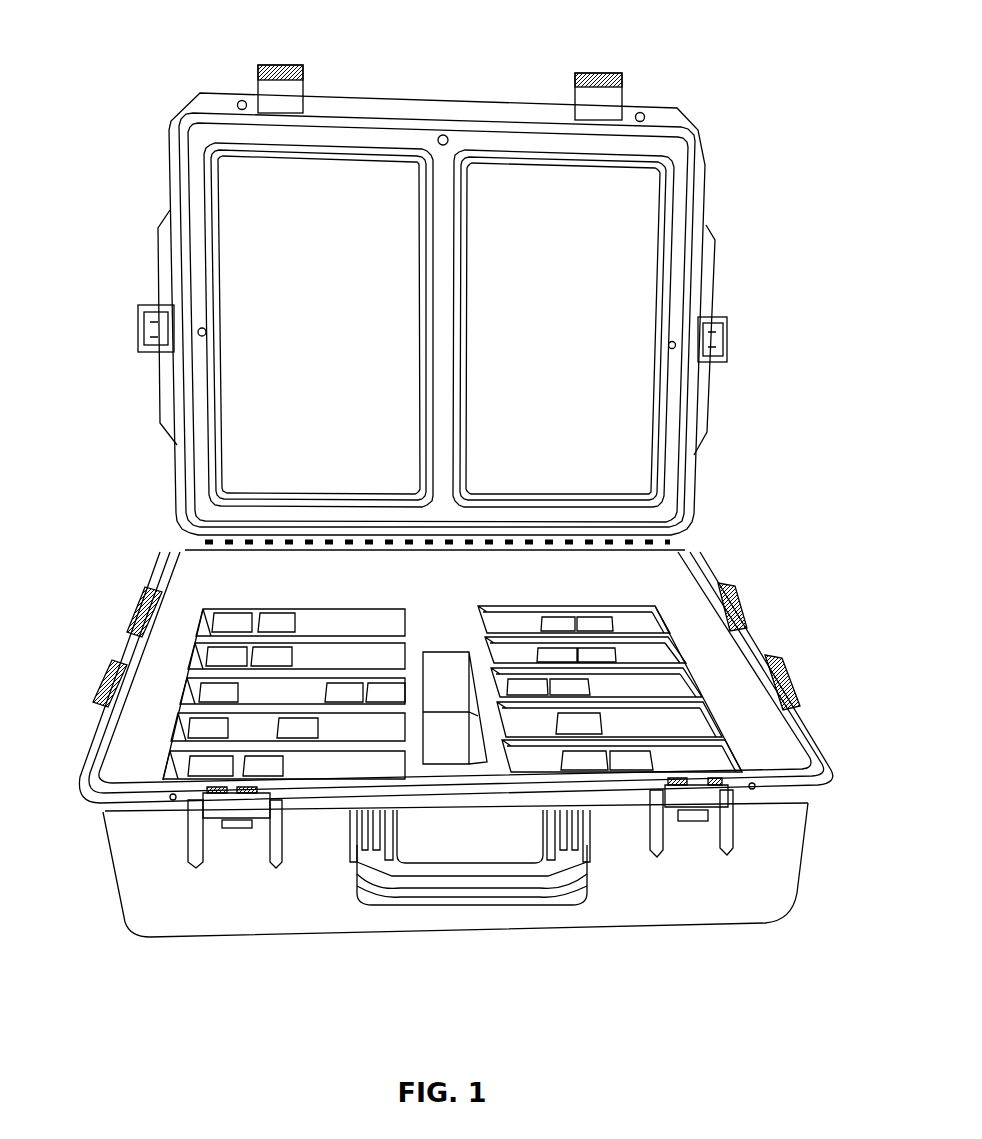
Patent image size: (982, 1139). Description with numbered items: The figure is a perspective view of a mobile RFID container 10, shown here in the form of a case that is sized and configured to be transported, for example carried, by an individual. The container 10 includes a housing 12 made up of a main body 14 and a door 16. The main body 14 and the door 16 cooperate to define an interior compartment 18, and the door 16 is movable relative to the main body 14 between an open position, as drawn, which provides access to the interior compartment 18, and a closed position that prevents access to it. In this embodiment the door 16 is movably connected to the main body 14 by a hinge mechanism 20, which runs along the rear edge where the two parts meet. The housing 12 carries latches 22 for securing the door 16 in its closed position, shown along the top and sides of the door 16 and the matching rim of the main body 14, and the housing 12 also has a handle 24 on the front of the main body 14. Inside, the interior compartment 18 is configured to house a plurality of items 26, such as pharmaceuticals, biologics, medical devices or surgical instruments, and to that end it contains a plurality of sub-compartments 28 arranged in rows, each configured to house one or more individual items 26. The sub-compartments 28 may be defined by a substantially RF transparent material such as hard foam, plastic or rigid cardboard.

The mobile RFID container 10 is at (778, 187).
The housing 12 is at (776, 585).
The main body 14 is at (822, 753).
The door 16 is at (703, 138).
The interior compartment 18 is at (232, 632).
The hinge mechanism 20 is at (672, 544).
The latches 22 is at (278, 64).
The handles 24 is at (505, 897).
The items 26 is at (258, 775).
The sub-compartments 28 is at (636, 622).